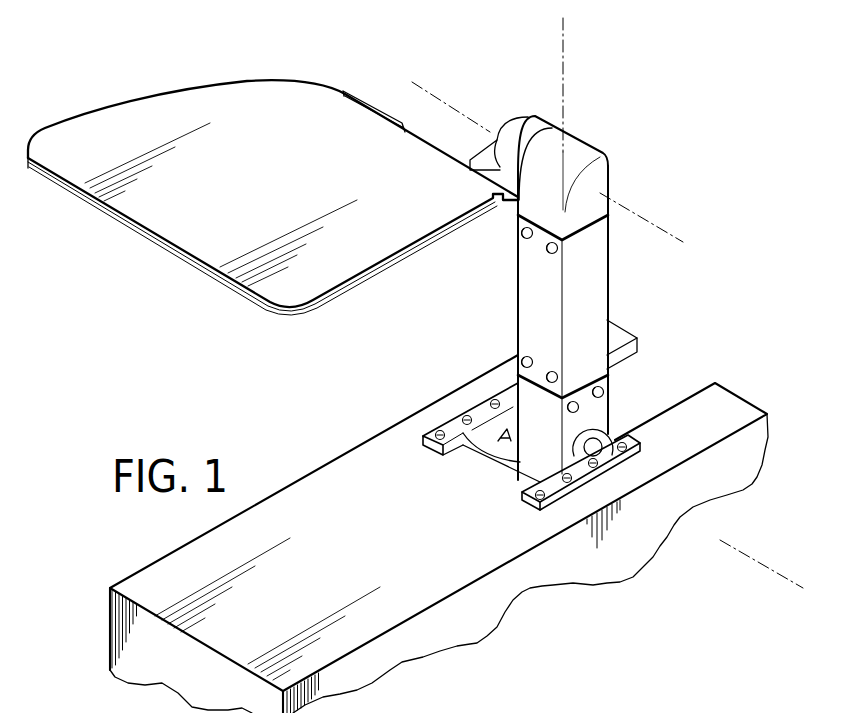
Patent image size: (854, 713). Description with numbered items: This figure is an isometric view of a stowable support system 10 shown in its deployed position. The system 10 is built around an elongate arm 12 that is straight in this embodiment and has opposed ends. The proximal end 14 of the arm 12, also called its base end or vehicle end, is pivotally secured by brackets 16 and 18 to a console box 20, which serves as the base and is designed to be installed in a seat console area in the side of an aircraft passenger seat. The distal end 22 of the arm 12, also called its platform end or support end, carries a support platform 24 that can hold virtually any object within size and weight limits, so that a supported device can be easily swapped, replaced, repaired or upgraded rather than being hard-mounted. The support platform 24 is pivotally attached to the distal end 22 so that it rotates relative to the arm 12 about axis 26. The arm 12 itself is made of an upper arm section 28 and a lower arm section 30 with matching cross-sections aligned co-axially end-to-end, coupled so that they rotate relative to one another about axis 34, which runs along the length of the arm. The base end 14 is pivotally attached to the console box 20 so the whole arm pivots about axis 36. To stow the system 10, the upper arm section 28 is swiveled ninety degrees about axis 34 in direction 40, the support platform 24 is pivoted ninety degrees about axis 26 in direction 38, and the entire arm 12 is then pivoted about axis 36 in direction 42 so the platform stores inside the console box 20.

The stowable support system 10 is at (396, 277).
The elongate arm 12 is at (639, 237).
The proximal end 14 is at (633, 413).
The bracket 16 is at (620, 444).
The bracket 18 is at (450, 426).
The console box 20 is at (472, 562).
The distal end 22 is at (591, 130).
The support platform 24 is at (252, 97).
The axis 26 is at (433, 95).
The upper arm section 28 is at (581, 288).
The lower arm section 30 is at (530, 403).
The axis 34 is at (567, 53).
The axis 36 is at (767, 563).
The direction 38 is at (467, 130).
The direction 40 is at (583, 72).
The direction 42 is at (785, 602).